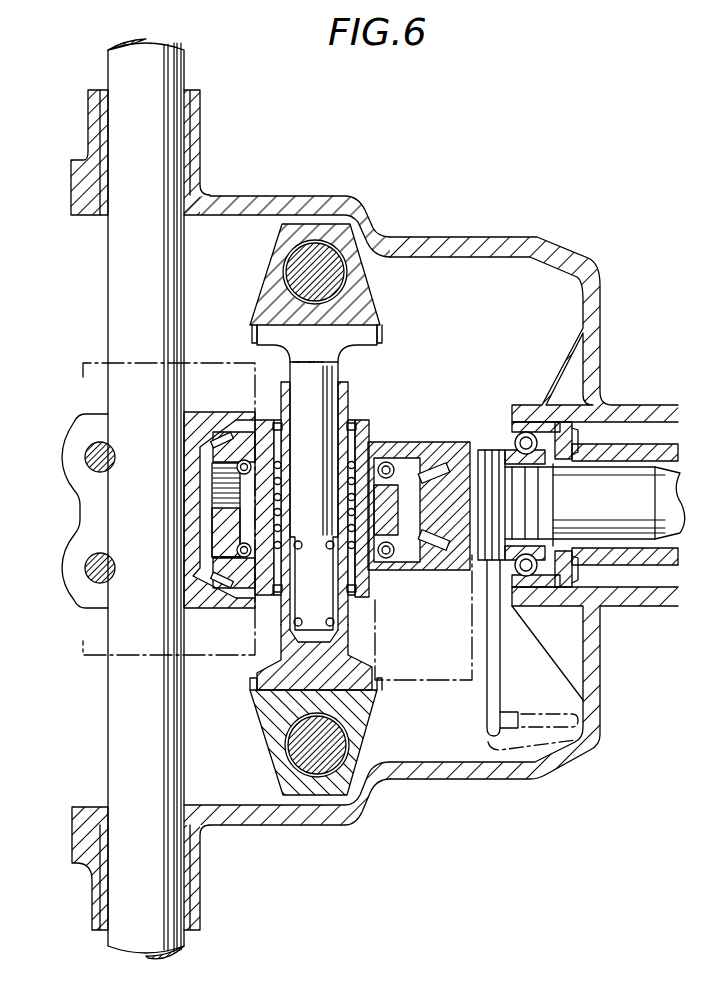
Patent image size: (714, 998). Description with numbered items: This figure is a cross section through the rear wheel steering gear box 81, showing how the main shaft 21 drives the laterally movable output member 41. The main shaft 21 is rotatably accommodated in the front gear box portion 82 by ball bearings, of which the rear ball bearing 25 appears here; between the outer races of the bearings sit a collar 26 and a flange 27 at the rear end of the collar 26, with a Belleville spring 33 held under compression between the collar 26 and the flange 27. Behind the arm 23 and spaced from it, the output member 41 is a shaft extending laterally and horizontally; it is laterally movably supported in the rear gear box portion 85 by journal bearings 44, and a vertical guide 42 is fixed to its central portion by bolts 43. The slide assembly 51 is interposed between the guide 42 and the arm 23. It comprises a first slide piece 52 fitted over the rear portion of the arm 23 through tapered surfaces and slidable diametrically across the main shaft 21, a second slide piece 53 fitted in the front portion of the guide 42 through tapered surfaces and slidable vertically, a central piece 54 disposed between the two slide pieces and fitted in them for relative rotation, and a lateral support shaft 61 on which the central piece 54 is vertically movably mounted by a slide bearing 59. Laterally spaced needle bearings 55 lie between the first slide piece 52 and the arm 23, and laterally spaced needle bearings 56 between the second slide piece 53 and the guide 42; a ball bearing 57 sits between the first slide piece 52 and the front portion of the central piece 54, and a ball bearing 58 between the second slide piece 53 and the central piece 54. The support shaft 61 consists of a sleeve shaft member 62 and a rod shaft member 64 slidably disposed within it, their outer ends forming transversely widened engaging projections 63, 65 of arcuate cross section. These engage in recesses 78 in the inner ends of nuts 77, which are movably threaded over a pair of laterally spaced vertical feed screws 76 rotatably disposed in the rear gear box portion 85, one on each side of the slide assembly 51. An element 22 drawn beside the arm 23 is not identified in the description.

The main shaft 21 is at (619, 512).
The shift lever 22 is at (535, 710).
The arm 23 is at (462, 503).
The rear ball bearing 25 is at (529, 436).
The collar 26 is at (650, 447).
The flange 27 is at (567, 588).
The Belleville spring 33 is at (578, 437).
The output member 41 is at (108, 725).
The vertical guide 42 is at (220, 608).
The bolts 43 is at (85, 457).
The journal bearings 44 is at (99, 122).
The slide assembly 51 is at (392, 390).
The first slide piece 52 is at (420, 572).
The second slide piece 53 is at (228, 455).
The central piece 54 is at (373, 455).
The needle bearings 55 is at (435, 472).
The needle bearings 56 is at (197, 425).
The ball bearing 57 is at (390, 560).
The ball bearing 58 is at (236, 548).
The slide bearing 59 is at (233, 512).
The lateral support shaft 61 is at (280, 632).
The sleeve shaft member 62 is at (281, 388).
The engaging projection 63 is at (380, 697).
The rod shaft member 64 is at (323, 398).
The engaging projection 65 is at (358, 334).
The feed screws 76 is at (321, 258).
The nuts 77 is at (358, 293).
The recesses 78 is at (272, 328).
The rear wheel steering gear box 81 is at (588, 240).
The front gear box portion 82 is at (650, 598).
The rear gear box portion 85 is at (255, 200).